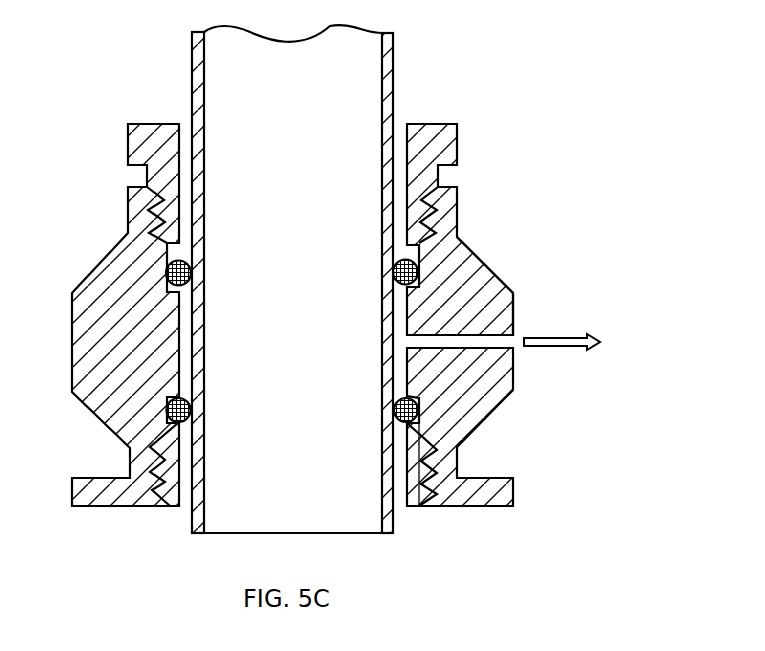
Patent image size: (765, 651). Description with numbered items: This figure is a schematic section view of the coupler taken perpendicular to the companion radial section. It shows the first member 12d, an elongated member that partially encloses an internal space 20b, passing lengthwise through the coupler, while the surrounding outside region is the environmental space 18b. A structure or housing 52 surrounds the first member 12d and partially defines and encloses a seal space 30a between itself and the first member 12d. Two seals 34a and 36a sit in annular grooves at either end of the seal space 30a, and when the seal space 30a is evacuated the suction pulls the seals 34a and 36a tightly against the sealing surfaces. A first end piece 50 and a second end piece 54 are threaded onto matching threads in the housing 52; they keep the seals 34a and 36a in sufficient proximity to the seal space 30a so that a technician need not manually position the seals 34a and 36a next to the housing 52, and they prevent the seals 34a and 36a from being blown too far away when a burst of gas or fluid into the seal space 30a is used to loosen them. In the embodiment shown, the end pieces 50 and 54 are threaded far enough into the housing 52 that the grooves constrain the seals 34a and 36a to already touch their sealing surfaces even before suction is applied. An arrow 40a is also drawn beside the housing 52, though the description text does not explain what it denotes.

The environmental space 18b is at (116, 79).
The internal space 20b is at (317, 117).
The first member 12d is at (393, 72).
The seal space 30a is at (187, 332).
The seal 34a is at (192, 269).
The seal 36a is at (192, 400).
The fluid flow direction arrow 40a is at (558, 338).
The first end piece 50 is at (457, 146).
The structure or housing 52 is at (492, 268).
The second end piece 54 is at (412, 507).